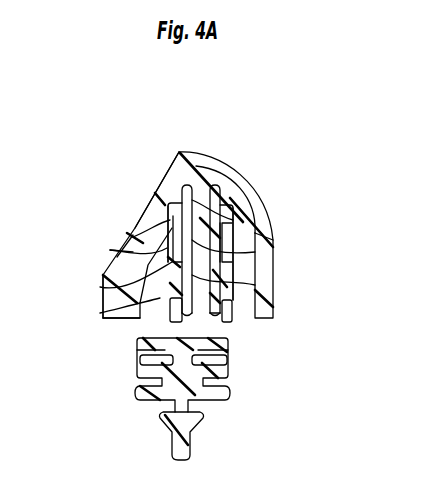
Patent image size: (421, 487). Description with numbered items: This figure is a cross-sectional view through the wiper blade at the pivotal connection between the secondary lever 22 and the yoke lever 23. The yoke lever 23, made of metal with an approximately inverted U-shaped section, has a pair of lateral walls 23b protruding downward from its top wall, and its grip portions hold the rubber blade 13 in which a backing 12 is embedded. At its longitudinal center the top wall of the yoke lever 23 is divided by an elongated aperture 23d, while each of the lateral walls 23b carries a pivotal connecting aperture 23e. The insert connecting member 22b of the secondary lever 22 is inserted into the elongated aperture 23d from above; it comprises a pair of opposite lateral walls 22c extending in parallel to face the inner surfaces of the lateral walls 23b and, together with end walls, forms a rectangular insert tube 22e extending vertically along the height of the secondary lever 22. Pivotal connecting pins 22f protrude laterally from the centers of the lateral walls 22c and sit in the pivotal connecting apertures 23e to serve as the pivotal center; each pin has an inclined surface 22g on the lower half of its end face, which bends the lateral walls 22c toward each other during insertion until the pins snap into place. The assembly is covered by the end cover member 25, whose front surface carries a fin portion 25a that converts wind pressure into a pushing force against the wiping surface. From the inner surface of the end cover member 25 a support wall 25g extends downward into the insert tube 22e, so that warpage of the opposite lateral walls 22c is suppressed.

The backing 12 is at (230, 360).
The rubber blade 13 is at (198, 445).
The secondary lever 22 is at (238, 182).
The insert connecting member 22b is at (277, 300).
The opposite lateral walls 22c is at (147, 235).
The insert tube 22e is at (215, 322).
The pivotal connecting pin 22f is at (103, 280).
The inclined surface 22g is at (104, 310).
The yoke lever 23 is at (113, 249).
The lateral walls 23b is at (258, 255).
The elongated aperture 23d is at (156, 198).
The pivotal connecting aperture 23e is at (250, 280).
The end cover member 25 is at (182, 150).
The fin portion 25a is at (136, 212).
The support wall 25g is at (262, 205).